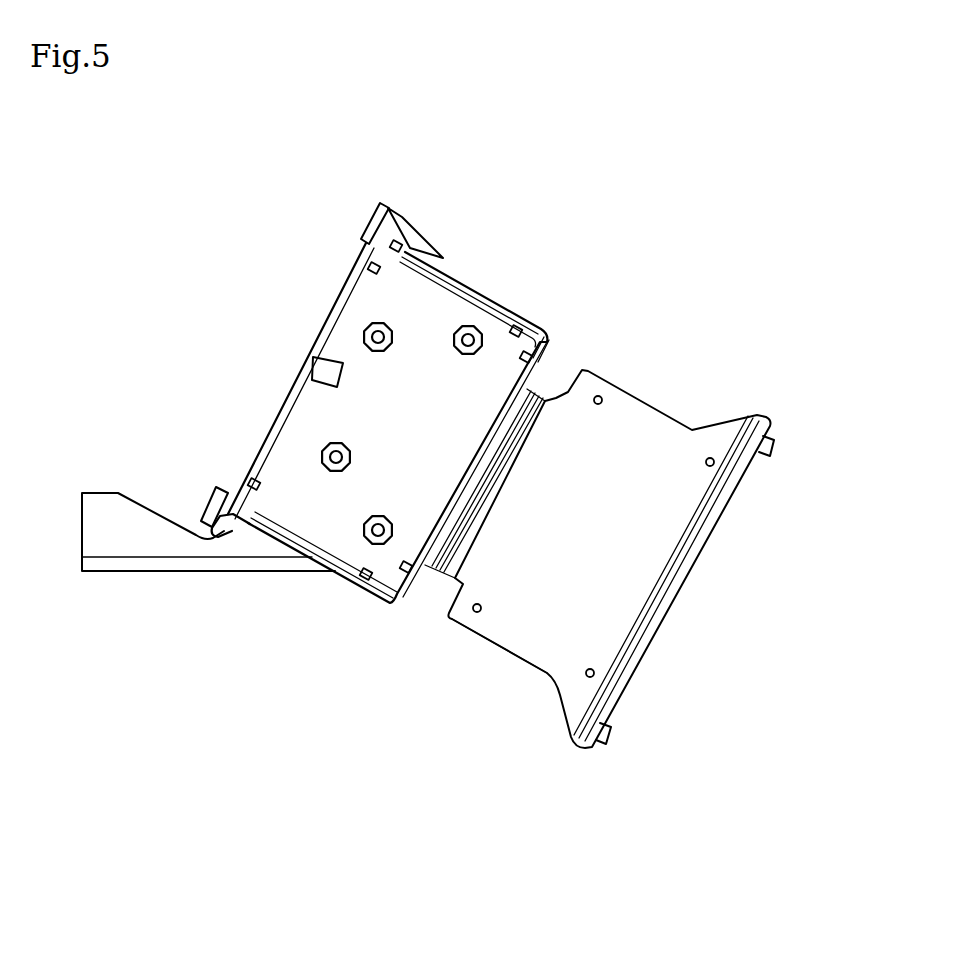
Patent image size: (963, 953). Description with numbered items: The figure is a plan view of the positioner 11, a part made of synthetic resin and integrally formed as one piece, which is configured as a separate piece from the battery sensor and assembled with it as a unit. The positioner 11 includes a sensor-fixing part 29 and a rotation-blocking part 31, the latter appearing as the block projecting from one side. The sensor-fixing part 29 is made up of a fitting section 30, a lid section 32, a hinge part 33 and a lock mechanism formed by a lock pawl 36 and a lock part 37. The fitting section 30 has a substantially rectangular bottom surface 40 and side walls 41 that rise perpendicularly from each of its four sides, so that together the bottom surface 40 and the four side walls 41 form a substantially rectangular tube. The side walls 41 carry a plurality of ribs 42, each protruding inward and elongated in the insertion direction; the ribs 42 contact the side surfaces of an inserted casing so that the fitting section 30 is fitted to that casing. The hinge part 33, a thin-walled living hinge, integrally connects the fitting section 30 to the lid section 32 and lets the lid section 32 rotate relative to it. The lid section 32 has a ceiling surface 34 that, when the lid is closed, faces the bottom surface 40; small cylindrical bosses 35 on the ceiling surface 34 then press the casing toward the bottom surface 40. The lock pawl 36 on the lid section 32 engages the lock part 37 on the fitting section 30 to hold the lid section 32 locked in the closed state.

The positioner 11 is at (257, 762).
The sensor-fixing part 29 is at (583, 253).
The fitting section 30 is at (293, 330).
The rotation-blocking part 31 is at (160, 572).
The lid section 32 is at (657, 430).
The hinge part 33 is at (497, 476).
The ceiling surface 34 is at (520, 623).
The boss 35 is at (597, 404).
The lock pawl 36 is at (771, 449).
The lock part 37 is at (372, 233).
The bottom surface 40 is at (318, 420).
The side wall 41 is at (347, 293).
The rib 42 is at (392, 248).